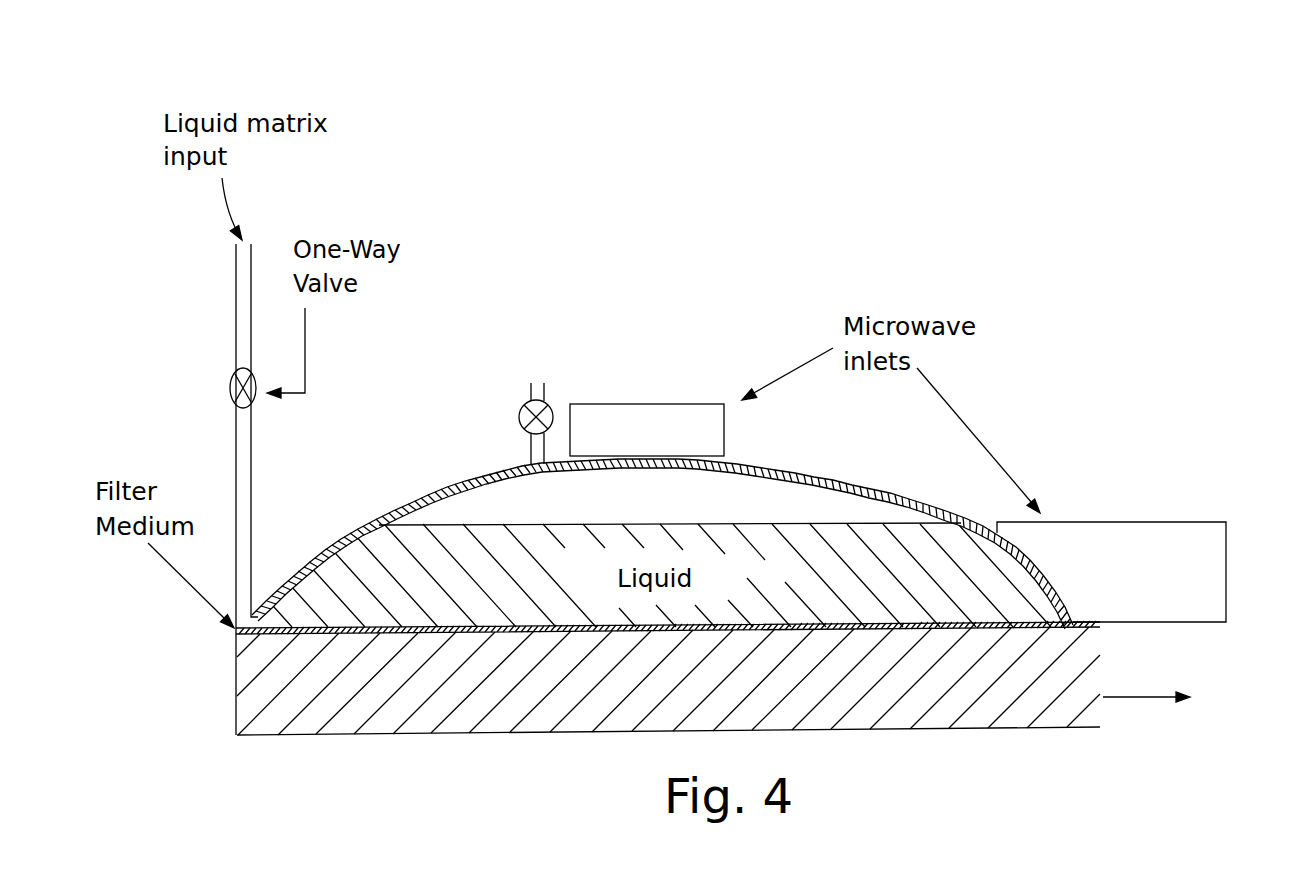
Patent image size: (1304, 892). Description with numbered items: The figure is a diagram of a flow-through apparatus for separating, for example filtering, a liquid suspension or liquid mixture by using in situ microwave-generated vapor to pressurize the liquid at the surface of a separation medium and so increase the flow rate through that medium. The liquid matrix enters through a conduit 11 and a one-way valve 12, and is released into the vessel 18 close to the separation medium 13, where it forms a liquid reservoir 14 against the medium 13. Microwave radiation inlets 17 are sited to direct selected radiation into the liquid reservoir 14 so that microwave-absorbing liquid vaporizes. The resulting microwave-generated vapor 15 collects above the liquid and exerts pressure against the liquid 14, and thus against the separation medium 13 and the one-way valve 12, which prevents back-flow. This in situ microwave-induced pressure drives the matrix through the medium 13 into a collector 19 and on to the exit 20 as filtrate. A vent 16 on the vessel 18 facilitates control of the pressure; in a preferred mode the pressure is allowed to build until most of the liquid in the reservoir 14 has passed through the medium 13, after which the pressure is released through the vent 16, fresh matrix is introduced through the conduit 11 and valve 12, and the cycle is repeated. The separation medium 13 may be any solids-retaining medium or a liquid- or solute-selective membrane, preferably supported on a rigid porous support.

The conduit 11 is at (236, 303).
The one-way valve 12 is at (230, 388).
The separation medium 13 is at (237, 632).
The liquid reservoir 14 is at (335, 567).
The microwave-generated vapor 15 is at (450, 508).
The vent 16 is at (526, 406).
The microwave radiation inlets 17 is at (668, 404).
The vessel 18 is at (813, 470).
The collector 19 is at (422, 700).
The exit 20 is at (1097, 714).